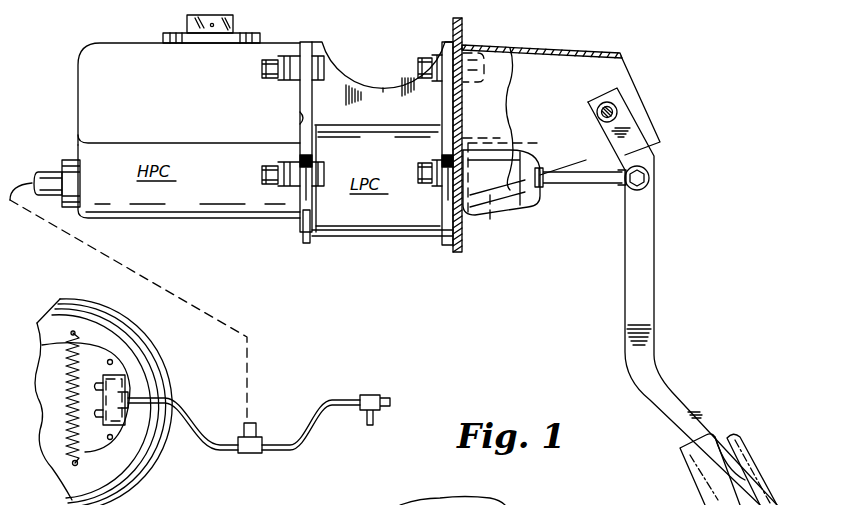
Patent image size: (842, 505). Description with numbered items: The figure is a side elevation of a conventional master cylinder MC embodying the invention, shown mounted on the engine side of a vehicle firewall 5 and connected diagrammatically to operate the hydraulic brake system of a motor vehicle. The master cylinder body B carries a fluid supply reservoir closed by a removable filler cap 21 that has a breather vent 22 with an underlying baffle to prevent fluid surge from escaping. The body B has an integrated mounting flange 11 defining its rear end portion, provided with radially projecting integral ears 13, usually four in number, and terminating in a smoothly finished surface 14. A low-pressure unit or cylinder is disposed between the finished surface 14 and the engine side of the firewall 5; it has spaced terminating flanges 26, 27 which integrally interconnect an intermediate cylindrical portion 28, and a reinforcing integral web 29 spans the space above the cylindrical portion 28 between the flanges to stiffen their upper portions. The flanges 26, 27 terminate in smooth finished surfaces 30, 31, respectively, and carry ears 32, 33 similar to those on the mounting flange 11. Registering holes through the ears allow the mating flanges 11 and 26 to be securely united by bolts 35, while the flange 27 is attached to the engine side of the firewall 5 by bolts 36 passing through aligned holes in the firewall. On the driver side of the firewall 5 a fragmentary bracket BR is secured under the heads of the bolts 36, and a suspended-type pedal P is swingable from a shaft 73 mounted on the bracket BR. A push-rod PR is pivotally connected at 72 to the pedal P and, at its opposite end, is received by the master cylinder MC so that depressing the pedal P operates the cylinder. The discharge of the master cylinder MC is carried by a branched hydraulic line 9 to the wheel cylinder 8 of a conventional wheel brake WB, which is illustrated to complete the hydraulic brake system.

The master cylinder body B is at (73, 61).
The filler cap 21 is at (188, 26).
The breather vent 22 is at (212, 28).
The mounting flange 11 is at (291, 228).
The ears 13 is at (281, 84).
The bolts 35 is at (262, 71).
The finished surface 14 is at (302, 118).
The flange 26 is at (306, 103).
The reinforcing web 29 is at (402, 82).
The finished surface 30 is at (303, 149).
The flange 27 is at (446, 138).
The cylindrical portion 28 is at (383, 237).
The ears 32 is at (310, 186).
The ears 33 is at (450, 186).
The firewall 5 is at (465, 238).
The bolts 36 is at (481, 62).
The finished surface 31 is at (460, 112).
The shaft 73 is at (616, 107).
The pivotal connection 72 is at (650, 183).
The hydraulic line 9 is at (172, 297).
The wheel cylinder 8 is at (125, 422).
The master cylinder MC is at (367, 66).
The bracket BR is at (661, 118).
The push-rod PR is at (580, 194).
The pedal P is at (663, 291).
The wheel brake WB is at (152, 357).